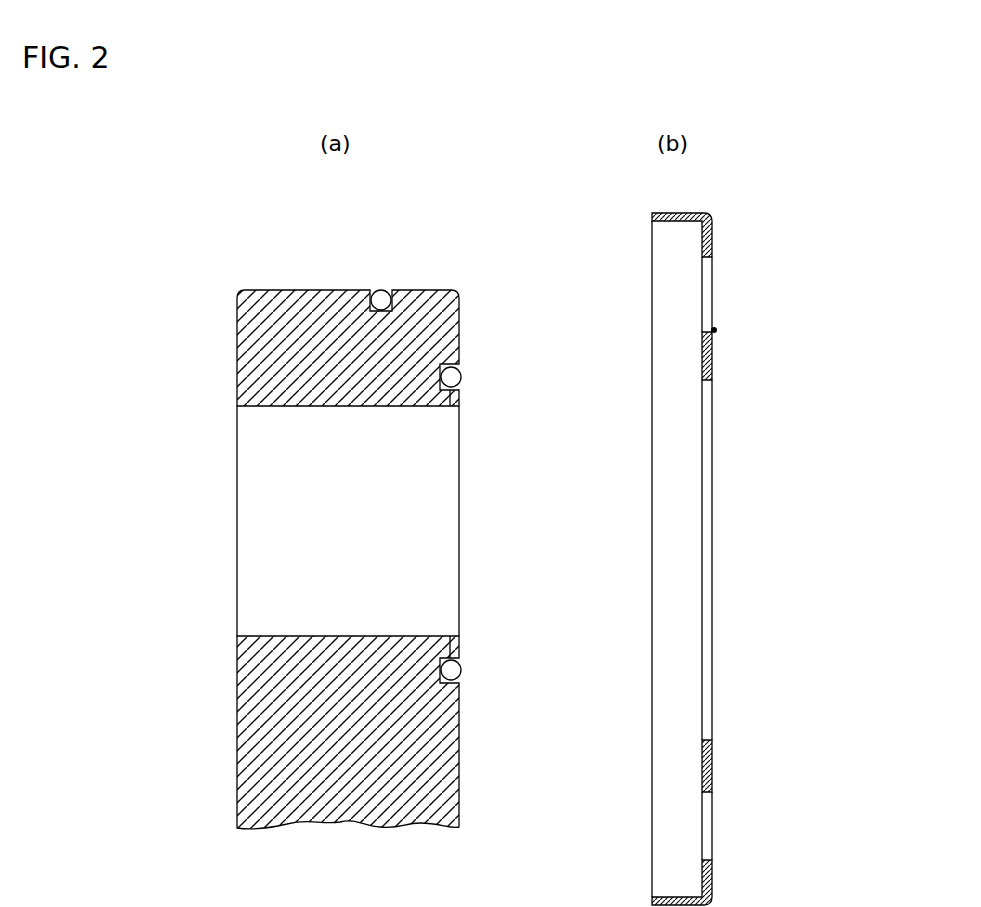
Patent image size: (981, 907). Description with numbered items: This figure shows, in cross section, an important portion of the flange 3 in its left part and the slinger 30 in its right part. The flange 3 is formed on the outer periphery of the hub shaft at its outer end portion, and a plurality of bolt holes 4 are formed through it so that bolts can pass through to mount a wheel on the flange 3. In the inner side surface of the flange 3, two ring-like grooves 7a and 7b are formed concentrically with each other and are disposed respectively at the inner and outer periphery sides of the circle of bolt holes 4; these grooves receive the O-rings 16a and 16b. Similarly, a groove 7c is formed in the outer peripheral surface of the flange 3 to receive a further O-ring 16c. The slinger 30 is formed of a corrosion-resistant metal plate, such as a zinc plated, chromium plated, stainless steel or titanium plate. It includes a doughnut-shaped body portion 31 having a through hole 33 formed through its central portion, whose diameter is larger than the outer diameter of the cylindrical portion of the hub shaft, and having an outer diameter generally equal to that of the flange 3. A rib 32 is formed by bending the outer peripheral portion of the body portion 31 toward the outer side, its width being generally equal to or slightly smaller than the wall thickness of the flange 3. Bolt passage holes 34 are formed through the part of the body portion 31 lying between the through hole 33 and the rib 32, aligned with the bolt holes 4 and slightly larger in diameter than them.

The flange 3 is at (374, 523).
The bolt holes 4 is at (249, 500).
The ring-like groove 7a is at (458, 634).
The ring-like groove 7b is at (457, 414).
The groove 7c is at (362, 300).
The O-ring 16a is at (458, 677).
The O-ring 16b is at (460, 372).
The O-ring 16c is at (378, 292).
The slinger 30 is at (715, 529).
The body portion 31 is at (709, 362).
The rib 32 is at (668, 212).
The through hole 33 is at (706, 520).
The bolt passage holes 34 is at (709, 298).